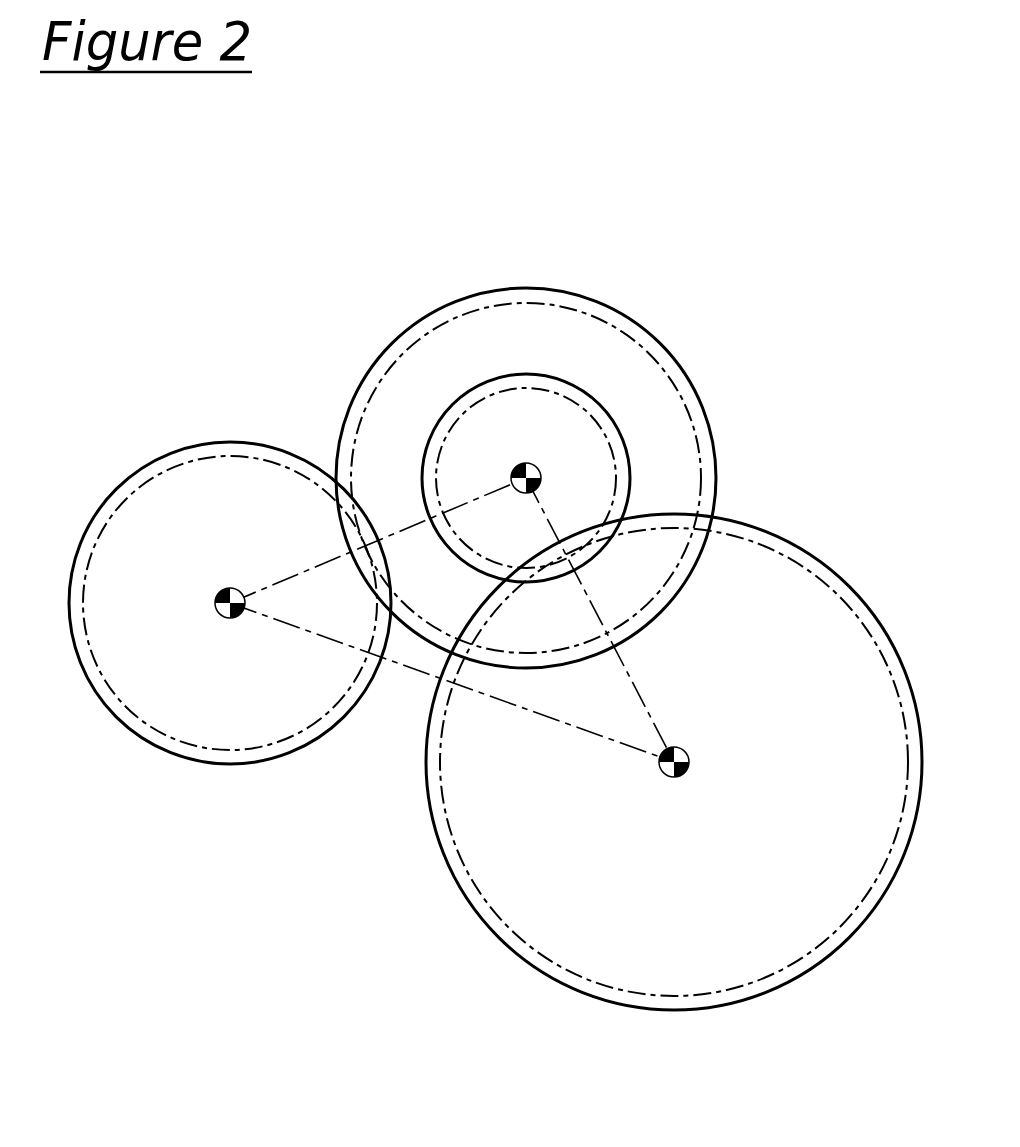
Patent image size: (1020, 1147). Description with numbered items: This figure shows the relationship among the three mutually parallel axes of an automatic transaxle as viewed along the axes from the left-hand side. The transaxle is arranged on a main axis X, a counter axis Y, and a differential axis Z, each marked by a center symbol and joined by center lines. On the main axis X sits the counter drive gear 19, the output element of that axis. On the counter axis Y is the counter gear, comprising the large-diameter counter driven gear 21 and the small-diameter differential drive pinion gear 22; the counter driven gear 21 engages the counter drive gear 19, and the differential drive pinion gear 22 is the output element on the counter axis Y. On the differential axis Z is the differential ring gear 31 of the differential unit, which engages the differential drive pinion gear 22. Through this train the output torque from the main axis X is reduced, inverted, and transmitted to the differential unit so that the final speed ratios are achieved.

The counter drive gear 19 is at (113, 717).
The counter driven gear 21 is at (433, 315).
The differential drive pinion gear 22 is at (600, 400).
The differential ring gear 31 is at (475, 913).
The main axis X is at (218, 590).
The counter axis Y is at (528, 462).
The differential axis Z is at (688, 750).